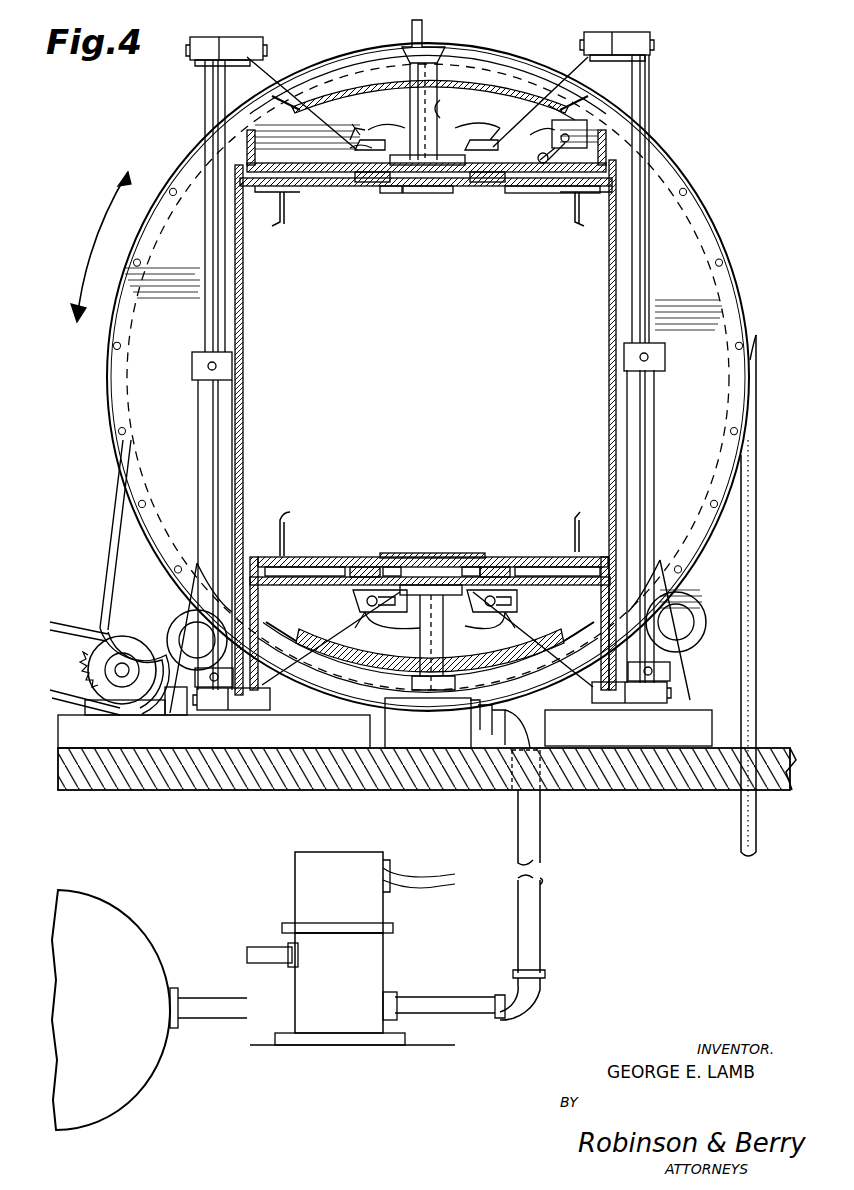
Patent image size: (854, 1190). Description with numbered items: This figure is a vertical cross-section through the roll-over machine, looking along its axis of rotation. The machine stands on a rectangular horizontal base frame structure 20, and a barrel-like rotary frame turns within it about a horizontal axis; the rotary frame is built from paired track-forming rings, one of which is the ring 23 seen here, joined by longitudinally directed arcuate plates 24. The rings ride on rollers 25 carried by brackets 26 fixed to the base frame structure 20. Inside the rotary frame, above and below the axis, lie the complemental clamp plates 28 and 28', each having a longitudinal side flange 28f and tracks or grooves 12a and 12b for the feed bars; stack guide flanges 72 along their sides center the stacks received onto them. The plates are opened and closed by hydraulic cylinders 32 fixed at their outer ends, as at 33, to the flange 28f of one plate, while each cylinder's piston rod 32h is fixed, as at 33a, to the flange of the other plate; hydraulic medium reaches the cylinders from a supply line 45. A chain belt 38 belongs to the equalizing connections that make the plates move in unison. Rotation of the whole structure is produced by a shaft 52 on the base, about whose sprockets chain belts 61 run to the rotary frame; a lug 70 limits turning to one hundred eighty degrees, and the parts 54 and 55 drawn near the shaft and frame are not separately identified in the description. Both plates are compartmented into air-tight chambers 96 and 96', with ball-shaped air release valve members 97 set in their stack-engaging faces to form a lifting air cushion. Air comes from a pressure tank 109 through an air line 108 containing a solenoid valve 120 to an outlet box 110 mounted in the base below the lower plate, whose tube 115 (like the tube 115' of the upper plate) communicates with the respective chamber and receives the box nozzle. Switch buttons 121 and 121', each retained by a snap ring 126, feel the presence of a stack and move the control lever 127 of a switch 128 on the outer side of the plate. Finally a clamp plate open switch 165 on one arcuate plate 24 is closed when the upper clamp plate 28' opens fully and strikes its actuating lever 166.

The base frame structure 20 is at (585, 760).
The track forming ring 23 is at (672, 160).
The arcuate plate 24 is at (485, 85).
The roller 25 is at (175, 615).
The bracket 26 is at (168, 716).
The clamp plate 28 is at (430, 599).
The clamp plate 28' is at (426, 185).
The longitudinal side flange 28f is at (262, 650).
The hydraulic cylinder 32 is at (200, 433).
The column upper rod 32h is at (208, 322).
The cylinder fixing point 33 is at (218, 710).
The piston rod fixing point 33a is at (190, 48).
The chain belt 38 is at (482, 100).
The supply line 45 is at (758, 612).
The shaft 52 is at (108, 665).
The drive chain arm 54 is at (58, 622).
The frame bracket 55 is at (752, 362).
The chain belt 61 is at (118, 522).
The lug 70 is at (408, 45).
The stack guide flange 72 is at (288, 528).
The air tight chamber 96 is at (432, 551).
The air tight chamber 96' is at (552, 206).
The ball shaped valve member 97 is at (410, 194).
The air line 108 is at (540, 828).
The air pressure tank 109 is at (132, 928).
The outlet box 110 is at (385, 728).
The tube 115 is at (420, 637).
The tube 115' is at (394, 111).
The solenoid valve 120 is at (385, 955).
The control switch button 121 is at (443, 537).
The control switch button 121' is at (370, 205).
The snap ring 126 is at (340, 166).
The control lever 127 is at (435, 629).
The switch 128 is at (353, 598).
The track or groove 12a is at (372, 562).
The track or groove 12b is at (352, 183).
The clamp plate open switch 165 is at (572, 120).
The actuating lever 166 is at (550, 158).